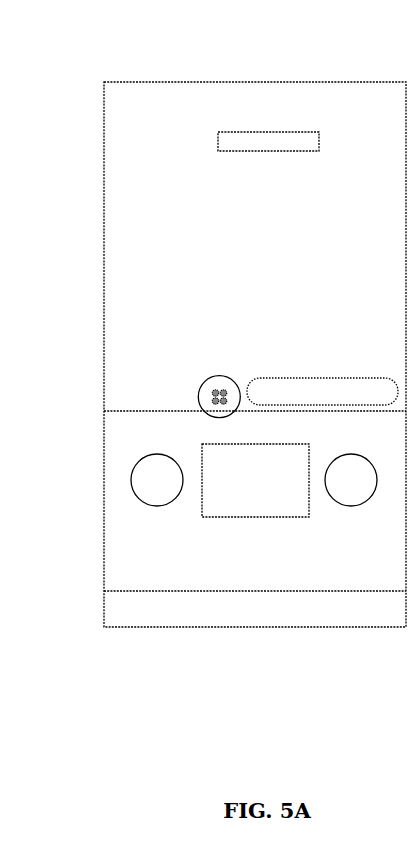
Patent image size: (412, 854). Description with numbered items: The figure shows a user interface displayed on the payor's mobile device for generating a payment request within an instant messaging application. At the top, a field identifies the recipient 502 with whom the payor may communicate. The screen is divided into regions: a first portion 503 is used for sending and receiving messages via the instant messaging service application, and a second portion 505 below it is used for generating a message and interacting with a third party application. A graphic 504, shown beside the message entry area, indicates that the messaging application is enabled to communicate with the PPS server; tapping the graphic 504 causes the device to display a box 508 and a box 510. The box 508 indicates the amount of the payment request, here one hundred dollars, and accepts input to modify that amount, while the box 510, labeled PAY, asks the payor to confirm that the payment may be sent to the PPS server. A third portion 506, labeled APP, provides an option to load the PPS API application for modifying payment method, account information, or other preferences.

The recipient 502 is at (218, 132).
The first portion 503 is at (127, 247).
The graphic 504 is at (198, 392).
The second portion 505 is at (119, 448).
The third portion 506 is at (157, 506).
The box 508 is at (256, 517).
The box 510 is at (351, 506).